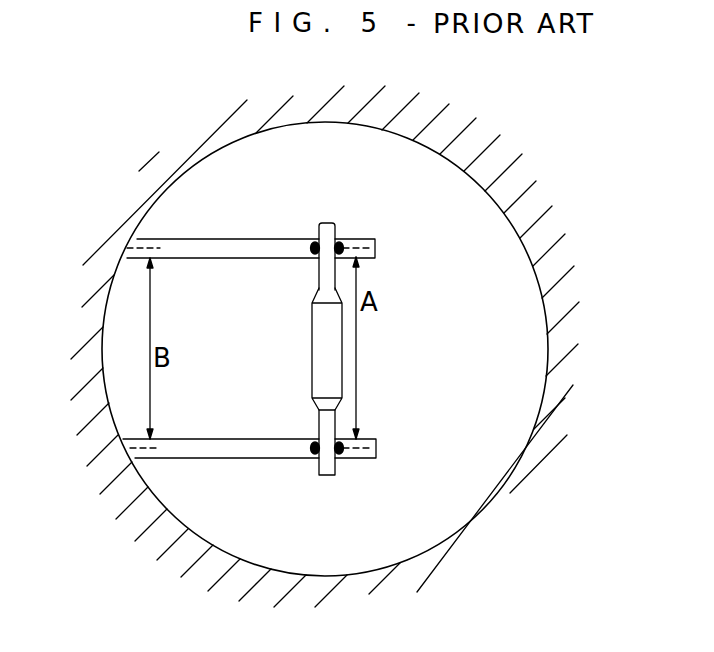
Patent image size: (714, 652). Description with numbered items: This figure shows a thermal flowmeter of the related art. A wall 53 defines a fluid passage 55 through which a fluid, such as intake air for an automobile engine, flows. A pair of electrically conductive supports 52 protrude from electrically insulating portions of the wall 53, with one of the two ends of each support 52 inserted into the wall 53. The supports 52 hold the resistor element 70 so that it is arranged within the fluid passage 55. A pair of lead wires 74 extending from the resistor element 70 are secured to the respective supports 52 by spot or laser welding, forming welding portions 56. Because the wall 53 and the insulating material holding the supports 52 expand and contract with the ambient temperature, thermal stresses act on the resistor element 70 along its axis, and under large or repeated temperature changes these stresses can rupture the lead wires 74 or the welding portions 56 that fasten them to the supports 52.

The support 52 is at (186, 253).
The wall 53 is at (88, 426).
The fluid passage 55 is at (467, 503).
The welding portion 56 is at (342, 248).
The resistor element 70 is at (366, 366).
The lead wire 74 is at (322, 279).